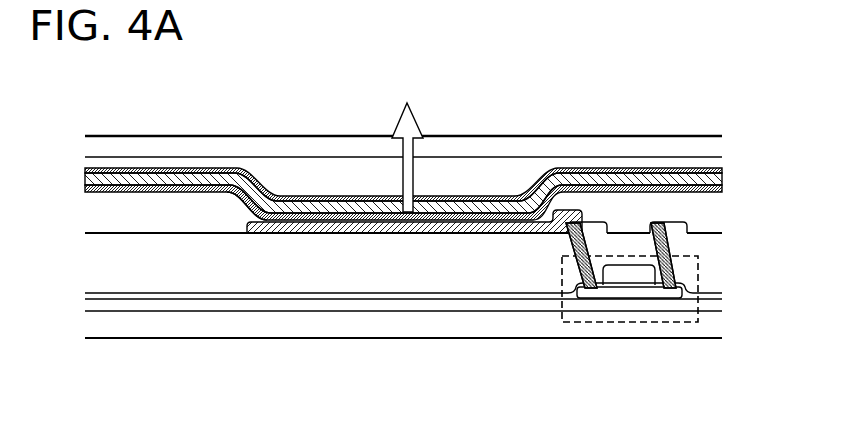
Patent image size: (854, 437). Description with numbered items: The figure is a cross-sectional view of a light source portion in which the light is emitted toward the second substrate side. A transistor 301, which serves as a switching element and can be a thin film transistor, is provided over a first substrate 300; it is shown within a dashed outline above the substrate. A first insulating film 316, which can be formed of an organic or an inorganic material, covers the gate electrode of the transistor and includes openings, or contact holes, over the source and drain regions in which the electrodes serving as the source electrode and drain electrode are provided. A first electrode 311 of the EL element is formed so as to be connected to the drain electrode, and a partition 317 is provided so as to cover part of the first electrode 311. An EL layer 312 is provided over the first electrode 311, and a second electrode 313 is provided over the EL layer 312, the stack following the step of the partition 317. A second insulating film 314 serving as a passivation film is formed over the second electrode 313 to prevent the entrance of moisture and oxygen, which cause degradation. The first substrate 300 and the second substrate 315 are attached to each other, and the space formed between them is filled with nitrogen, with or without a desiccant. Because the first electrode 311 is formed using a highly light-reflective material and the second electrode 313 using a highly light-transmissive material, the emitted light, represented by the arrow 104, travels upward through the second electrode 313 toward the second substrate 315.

The arrows 104 is at (418, 123).
The first substrate 300 is at (243, 330).
The transistor 301 is at (680, 322).
The first electrode 311 is at (390, 226).
The EL layer 312 is at (722, 190).
The second electrode 313 is at (722, 178).
The second insulating film 314 is at (722, 169).
The second substrate 315 is at (300, 141).
The first insulating film 316 is at (612, 245).
The partition 317 is at (203, 197).